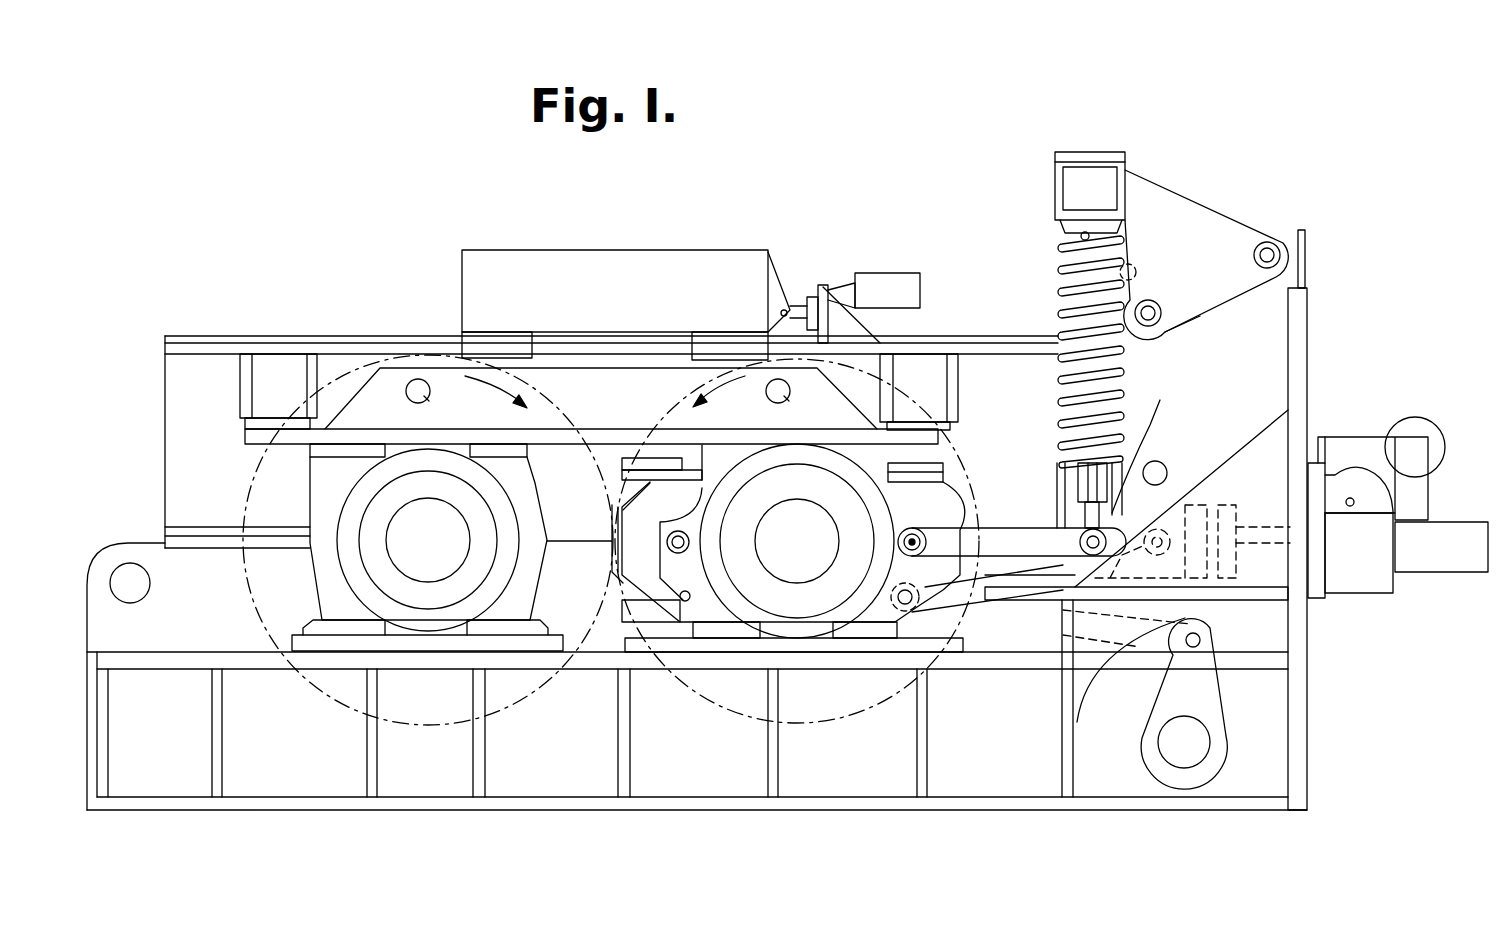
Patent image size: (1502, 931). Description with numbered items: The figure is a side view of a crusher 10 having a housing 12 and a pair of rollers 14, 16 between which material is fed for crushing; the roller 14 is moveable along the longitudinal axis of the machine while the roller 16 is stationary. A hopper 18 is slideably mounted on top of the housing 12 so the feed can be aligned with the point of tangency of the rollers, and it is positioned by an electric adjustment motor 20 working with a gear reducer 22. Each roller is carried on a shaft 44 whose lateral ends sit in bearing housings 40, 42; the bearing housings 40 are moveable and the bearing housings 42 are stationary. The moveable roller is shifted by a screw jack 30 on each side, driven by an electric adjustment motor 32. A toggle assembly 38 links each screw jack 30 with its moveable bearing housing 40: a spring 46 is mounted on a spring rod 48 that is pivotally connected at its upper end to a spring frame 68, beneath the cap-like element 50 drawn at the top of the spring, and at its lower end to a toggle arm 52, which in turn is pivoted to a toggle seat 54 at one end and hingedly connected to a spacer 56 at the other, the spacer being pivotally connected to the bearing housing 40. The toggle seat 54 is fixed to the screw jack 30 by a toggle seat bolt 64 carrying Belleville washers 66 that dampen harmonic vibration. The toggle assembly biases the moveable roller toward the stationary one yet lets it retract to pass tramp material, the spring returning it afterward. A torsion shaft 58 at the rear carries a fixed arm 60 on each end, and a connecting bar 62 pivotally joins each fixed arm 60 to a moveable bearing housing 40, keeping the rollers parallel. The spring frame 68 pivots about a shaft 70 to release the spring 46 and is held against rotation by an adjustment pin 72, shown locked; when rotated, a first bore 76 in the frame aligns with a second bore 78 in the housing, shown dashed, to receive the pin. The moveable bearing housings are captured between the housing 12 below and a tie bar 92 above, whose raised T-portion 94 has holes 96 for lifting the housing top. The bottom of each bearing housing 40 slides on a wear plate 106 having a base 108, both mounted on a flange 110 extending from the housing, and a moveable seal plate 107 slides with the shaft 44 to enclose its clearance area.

The crusher 10 is at (410, 300).
The housing 12 is at (165, 345).
The roller 14 is at (955, 440).
The roller 16 is at (262, 602).
The hopper 18 is at (705, 260).
The electric adjustment motor 20 is at (895, 275).
The gear reducer 22 is at (835, 283).
The screw jack 30 is at (1383, 583).
The electric adjustment motor 32 is at (1418, 428).
The toggle assembly 38 is at (1040, 243).
The bearing housing 40 is at (730, 600).
The bearing housing 42 is at (500, 500).
The shaft 44 is at (450, 546).
The spring 46 is at (1058, 312).
The spring rod 48 is at (1140, 445).
The spring cap 50 is at (1110, 157).
The toggle arm 52 is at (1058, 538).
The toggle seat 54 is at (1198, 500).
The spacer 56 is at (935, 528).
The torsion shaft 58 is at (1160, 745).
The fixed arm 60 is at (1195, 700).
The connecting bar 62 is at (1008, 617).
The toggle seat bolt 64 is at (1300, 543).
The Belleville washers 66 is at (1215, 510).
The spring frame 68 is at (1160, 190).
The shaft 70 is at (1268, 242).
The adjustment pin 72 is at (1158, 322).
The first bore 76 is at (1160, 305).
The second bore 78 is at (1135, 265).
The tie bar 92 is at (262, 440).
The raised T-portion 94 is at (623, 387).
The holes 96 is at (428, 398).
The wear plate 106 is at (817, 640).
The moveable seal plate 107 is at (640, 592).
The base 108 is at (790, 650).
The flange 110 is at (747, 663).